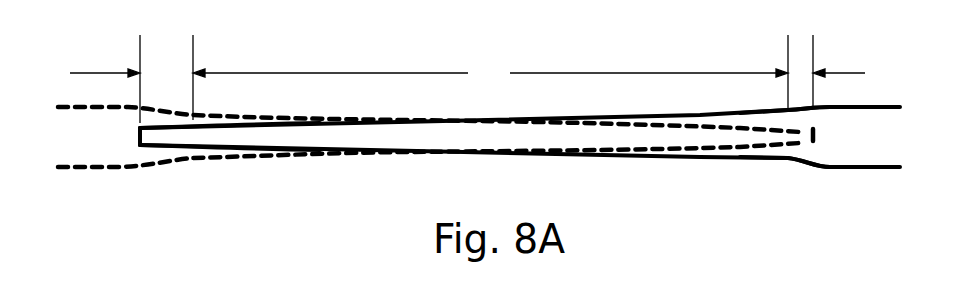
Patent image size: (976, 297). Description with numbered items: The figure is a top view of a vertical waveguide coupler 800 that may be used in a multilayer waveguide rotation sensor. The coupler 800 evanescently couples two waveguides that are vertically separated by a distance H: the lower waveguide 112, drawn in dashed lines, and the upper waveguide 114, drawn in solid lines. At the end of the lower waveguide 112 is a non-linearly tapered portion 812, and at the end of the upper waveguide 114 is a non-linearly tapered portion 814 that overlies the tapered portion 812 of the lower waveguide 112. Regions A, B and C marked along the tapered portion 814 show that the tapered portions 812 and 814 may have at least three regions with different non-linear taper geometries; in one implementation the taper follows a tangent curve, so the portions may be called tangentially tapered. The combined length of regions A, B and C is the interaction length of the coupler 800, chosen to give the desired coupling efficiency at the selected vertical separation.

The vertical waveguide coupler 800 is at (572, 53).
The lower waveguide 112 is at (118, 170).
The upper waveguide 114 is at (873, 105).
The non-linearly tapered portion 812 is at (212, 173).
The non-linearly tapered portion 814 is at (758, 172).